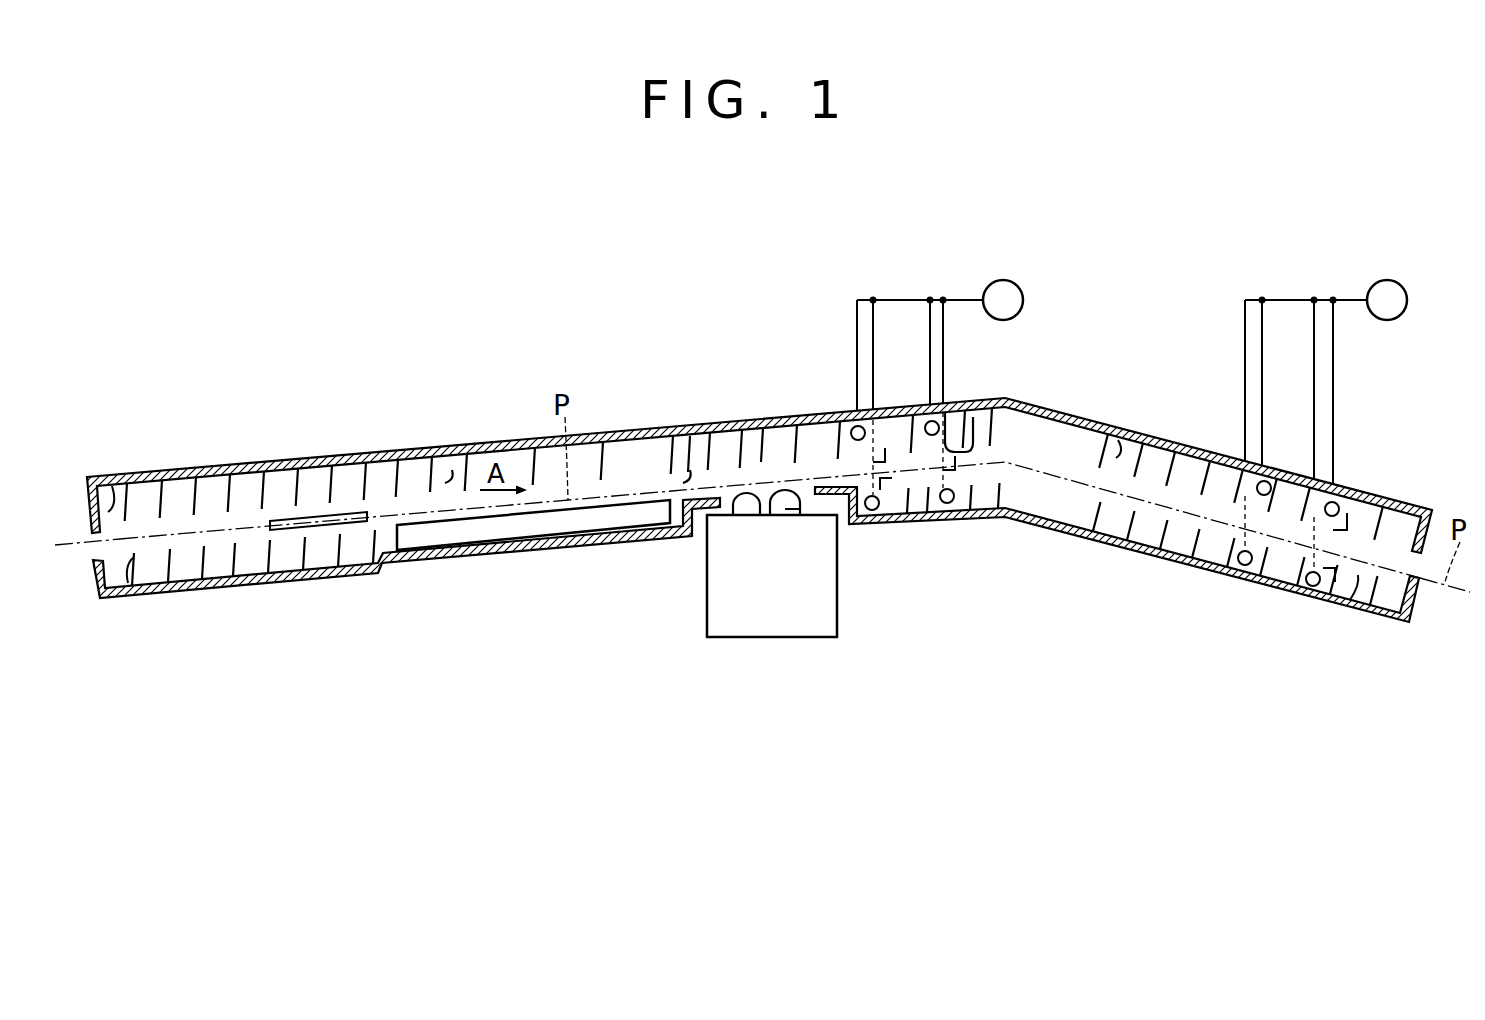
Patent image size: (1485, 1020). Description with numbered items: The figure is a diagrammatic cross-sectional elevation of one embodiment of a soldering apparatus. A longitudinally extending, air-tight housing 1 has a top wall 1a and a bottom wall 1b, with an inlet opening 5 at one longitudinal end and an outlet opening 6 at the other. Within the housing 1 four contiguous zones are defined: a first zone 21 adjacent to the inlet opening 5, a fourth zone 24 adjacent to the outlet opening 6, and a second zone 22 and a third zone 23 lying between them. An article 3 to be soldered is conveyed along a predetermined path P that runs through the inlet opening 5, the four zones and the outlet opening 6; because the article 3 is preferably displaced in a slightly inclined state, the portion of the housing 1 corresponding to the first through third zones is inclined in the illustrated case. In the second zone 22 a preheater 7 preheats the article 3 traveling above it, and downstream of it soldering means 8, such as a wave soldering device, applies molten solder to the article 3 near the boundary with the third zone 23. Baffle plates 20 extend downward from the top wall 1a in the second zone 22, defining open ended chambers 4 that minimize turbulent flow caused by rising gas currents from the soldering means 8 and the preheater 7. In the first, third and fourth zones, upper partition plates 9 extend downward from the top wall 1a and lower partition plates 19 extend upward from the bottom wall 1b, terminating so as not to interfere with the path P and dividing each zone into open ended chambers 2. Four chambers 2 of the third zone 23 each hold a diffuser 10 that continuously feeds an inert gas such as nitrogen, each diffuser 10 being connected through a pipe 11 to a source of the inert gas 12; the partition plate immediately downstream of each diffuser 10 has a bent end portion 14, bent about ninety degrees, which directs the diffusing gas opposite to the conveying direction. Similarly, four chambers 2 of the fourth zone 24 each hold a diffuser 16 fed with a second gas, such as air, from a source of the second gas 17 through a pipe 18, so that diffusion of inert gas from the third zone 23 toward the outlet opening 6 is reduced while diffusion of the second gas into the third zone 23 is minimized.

The housing 1 is at (759, 469).
The top wall 1a is at (190, 472).
The bottom wall 1b is at (256, 576).
The open ended chambers 2 is at (275, 487).
The article 3 is at (322, 518).
The open ended chambers 4 is at (764, 450).
The inlet opening 5 is at (96, 545).
The outlet opening 6 is at (1410, 598).
The preheater 7 is at (516, 528).
The soldering means 8 is at (695, 595).
The upper partition plates 9 is at (110, 500).
The diffuser 10 is at (851, 423).
The pipe 11 is at (856, 318).
The source of the inert gas 12 is at (1024, 300).
The bent end portion 14 is at (955, 440).
The diffuser 16 is at (1337, 497).
The source of the second gas 17 is at (1408, 300).
The pipe 18 is at (1243, 322).
The lower partition plates 19 is at (126, 580).
The baffle plates 20 is at (455, 470).
The first zone 21 is at (190, 540).
The second zone 22 is at (735, 478).
The third zone 23 is at (905, 530).
The fourth zone 24 is at (1108, 495).